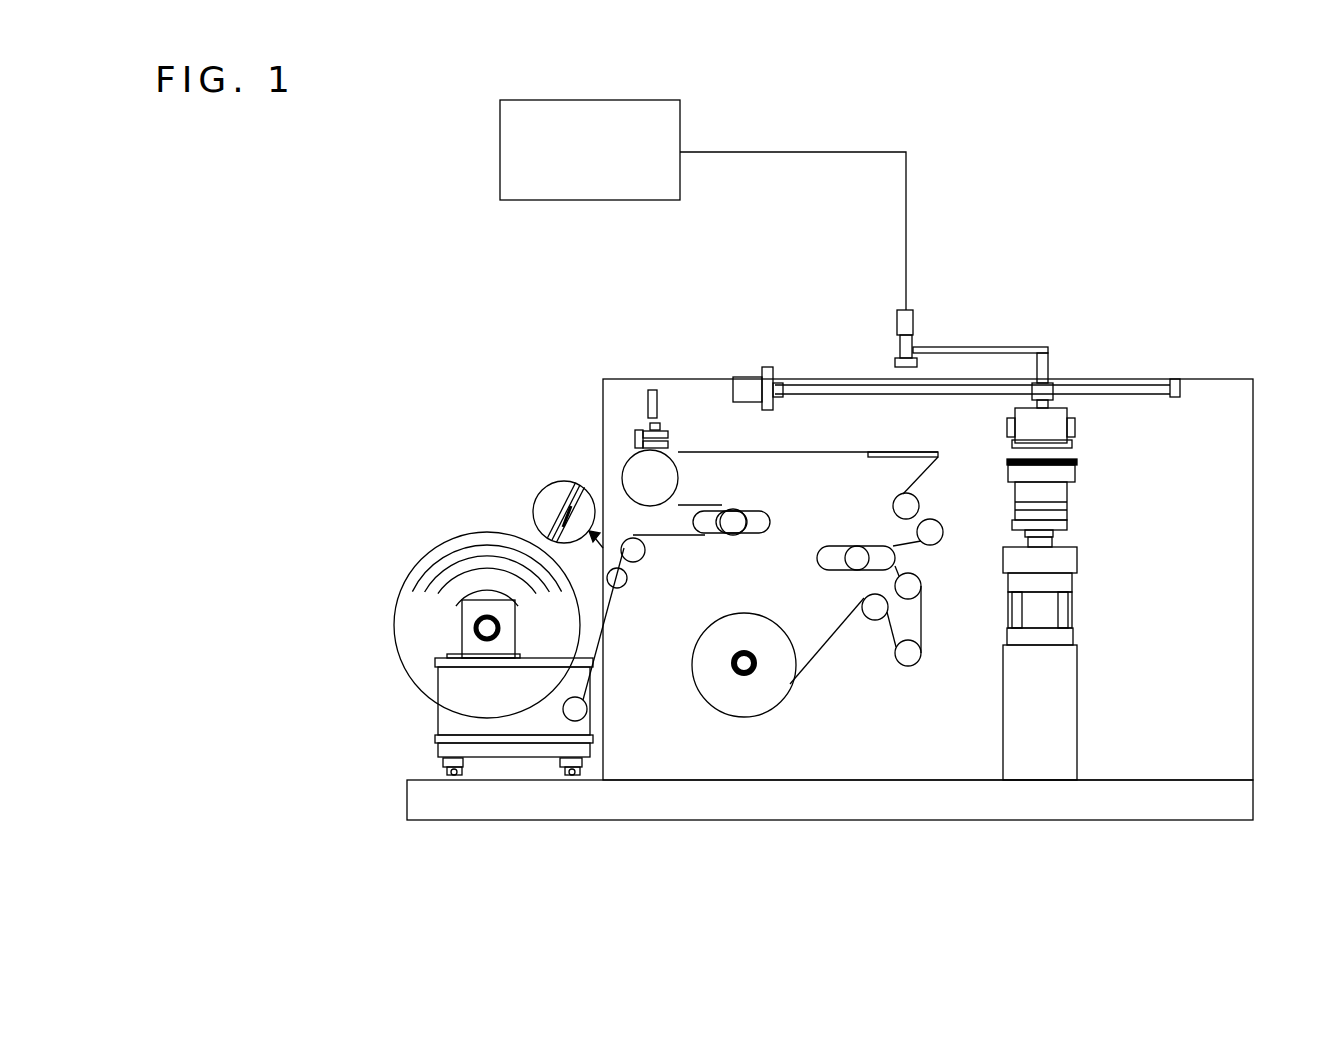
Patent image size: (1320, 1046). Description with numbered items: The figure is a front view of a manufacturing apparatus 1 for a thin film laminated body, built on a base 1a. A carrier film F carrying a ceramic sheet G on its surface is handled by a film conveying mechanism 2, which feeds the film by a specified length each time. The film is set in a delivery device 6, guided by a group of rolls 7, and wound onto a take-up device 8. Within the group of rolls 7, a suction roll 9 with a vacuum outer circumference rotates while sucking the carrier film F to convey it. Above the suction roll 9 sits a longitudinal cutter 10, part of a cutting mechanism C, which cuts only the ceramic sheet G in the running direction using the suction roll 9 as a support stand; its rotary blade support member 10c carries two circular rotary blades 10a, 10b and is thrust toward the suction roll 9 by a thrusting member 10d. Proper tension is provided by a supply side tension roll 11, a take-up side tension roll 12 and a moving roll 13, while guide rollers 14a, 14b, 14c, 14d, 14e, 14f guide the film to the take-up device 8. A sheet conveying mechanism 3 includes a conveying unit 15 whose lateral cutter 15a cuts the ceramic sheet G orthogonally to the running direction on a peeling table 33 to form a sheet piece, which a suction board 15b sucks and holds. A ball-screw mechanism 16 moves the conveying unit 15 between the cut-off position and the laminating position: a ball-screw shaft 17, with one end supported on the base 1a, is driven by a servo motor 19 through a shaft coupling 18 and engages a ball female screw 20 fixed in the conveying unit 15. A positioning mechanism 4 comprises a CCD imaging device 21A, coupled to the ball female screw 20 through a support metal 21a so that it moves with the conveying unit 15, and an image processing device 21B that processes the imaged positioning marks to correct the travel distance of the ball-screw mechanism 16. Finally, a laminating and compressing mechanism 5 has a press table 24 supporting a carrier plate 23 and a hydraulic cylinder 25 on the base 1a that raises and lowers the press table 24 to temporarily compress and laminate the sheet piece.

The manufacturing apparatus 1 is at (1277, 175).
The base 1a is at (1168, 808).
The film conveying mechanism 2 is at (724, 350).
The sheet conveying mechanism 3 is at (1067, 499).
The positioning mechanism 4 is at (910, 140).
The laminating and compressing mechanism 5 is at (1093, 460).
The delivery device 6 is at (376, 616).
The group of rolls 7 is at (641, 595).
The take-up device 8 is at (752, 693).
The suction roll 9 is at (643, 470).
The longitudinal cutter 10 is at (724, 350).
The circular rotary blade 10a is at (726, 437).
The circular rotary blade 10b is at (668, 436).
The rotary blade support member 10c is at (667, 428).
The thrusting member 10d is at (656, 388).
The supply side tension roll 11 is at (735, 517).
The take-up side tension roll 12 is at (856, 568).
The moving roll 13 is at (909, 503).
The guide roller 14a is at (581, 708).
The guide roller 14b is at (638, 551).
The guide roller 14c is at (932, 533).
The guide roller 14d is at (913, 589).
The guide roller 14e is at (913, 657).
The guide roller 14f is at (865, 614).
The conveying unit 15 is at (1073, 446).
The lateral cutter 15a is at (1008, 443).
The suction board 15b is at (1047, 453).
The ball-screw mechanism 16 is at (961, 335).
The ball-screw shaft 17 is at (1131, 385).
The shaft coupling 18 is at (768, 367).
The servo motor 19 is at (745, 377).
The ball female screw 20 is at (1050, 385).
The CCD imaging device 21A is at (915, 310).
The image processing device 21B is at (576, 202).
The support metal 21a is at (1005, 348).
The carrier plate 23 is at (1076, 463).
The press table 24 is at (1062, 477).
The hydraulic cylinder 25 is at (1073, 561).
The peeling table 33 is at (878, 452).
The cutting mechanism C is at (640, 290).
The carrier film F is at (577, 528).
The ceramic sheet G is at (538, 501).